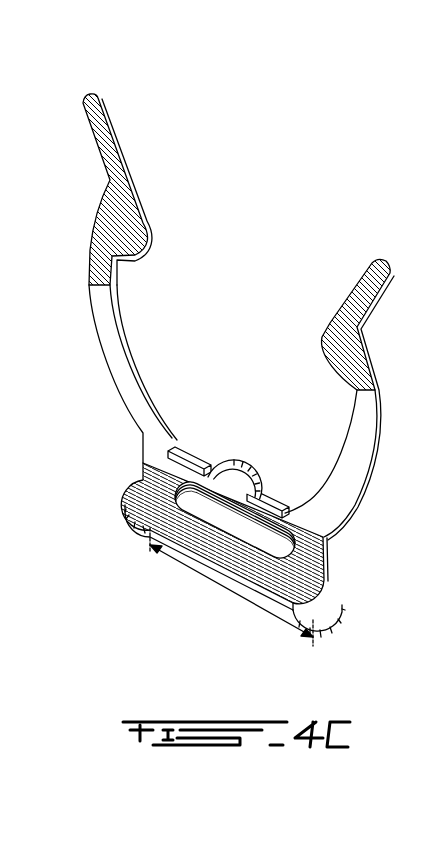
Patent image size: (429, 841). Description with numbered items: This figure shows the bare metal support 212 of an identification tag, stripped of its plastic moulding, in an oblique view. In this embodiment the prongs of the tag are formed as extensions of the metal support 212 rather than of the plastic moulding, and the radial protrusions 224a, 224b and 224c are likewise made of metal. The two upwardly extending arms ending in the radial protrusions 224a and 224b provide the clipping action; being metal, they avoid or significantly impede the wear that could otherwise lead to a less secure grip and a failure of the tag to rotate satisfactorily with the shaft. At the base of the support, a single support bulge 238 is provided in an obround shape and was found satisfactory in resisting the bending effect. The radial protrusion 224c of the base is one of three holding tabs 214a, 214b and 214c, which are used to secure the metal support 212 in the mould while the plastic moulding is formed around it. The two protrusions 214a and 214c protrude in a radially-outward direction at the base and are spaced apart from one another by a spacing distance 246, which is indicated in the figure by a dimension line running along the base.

The metal support 212 is at (143, 510).
The holding tab 214a is at (226, 456).
The holding tab 214b is at (128, 487).
The holding tab 214c is at (340, 614).
The radial protrusion 224a is at (150, 242).
The radial protrusion 224b is at (324, 343).
The radial protrusion 224c is at (248, 459).
The support bulge 238 is at (240, 530).
The spacing distance 246 is at (188, 572).